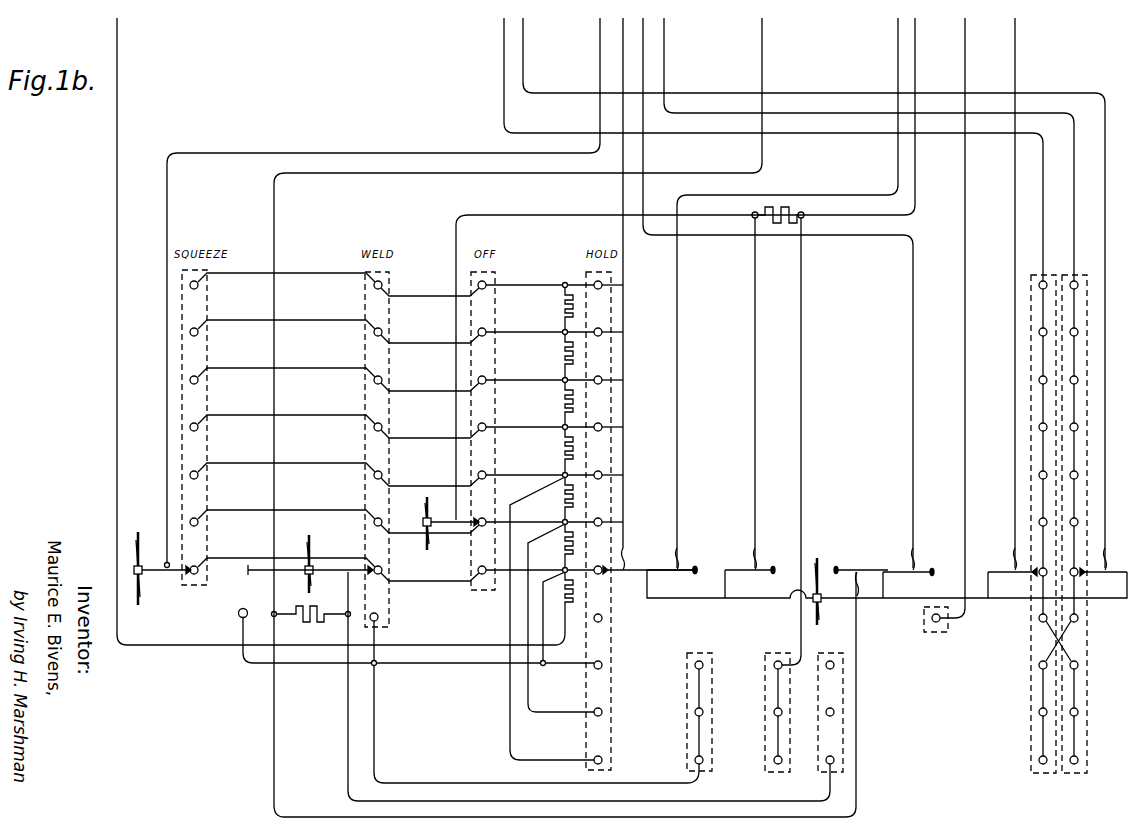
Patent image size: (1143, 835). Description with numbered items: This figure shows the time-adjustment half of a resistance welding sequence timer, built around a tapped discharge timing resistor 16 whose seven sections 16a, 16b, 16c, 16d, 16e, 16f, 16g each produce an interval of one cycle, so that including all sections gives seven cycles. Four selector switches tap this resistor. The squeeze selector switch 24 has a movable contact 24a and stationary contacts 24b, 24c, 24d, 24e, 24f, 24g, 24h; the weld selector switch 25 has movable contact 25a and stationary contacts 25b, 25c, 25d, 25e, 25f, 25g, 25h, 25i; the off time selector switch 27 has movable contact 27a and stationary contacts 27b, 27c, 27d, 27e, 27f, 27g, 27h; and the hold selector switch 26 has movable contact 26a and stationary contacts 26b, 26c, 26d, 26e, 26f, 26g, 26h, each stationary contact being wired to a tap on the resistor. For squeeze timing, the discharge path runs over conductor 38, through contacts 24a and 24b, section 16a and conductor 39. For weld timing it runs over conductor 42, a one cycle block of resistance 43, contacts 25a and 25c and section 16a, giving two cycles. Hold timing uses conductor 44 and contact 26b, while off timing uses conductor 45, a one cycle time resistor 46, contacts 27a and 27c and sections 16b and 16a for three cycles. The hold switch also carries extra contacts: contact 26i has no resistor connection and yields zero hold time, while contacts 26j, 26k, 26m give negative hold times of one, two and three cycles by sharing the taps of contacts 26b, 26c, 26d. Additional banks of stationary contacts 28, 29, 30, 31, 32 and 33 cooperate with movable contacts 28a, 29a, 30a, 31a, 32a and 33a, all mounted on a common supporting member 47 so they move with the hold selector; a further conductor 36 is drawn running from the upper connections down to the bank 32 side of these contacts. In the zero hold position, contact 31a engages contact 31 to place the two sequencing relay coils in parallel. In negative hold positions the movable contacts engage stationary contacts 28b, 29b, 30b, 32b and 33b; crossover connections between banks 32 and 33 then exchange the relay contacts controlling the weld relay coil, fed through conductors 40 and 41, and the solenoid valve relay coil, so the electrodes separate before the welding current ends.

The discharge timing resistor 16 is at (564, 437).
The section of the discharge timing resistor 16a is at (570, 592).
The section of the discharge timing resistor 16b is at (561, 541).
The section of the discharge timing resistor 16c is at (561, 493).
The section of the discharge timing resistor 16d is at (561, 446).
The section of the discharge timing resistor 16e is at (561, 398).
The section of the discharge timing resistor 16f is at (561, 351).
The section of the discharge timing resistor 16g is at (561, 303).
The squeeze selector switch 24 is at (182, 354).
The movable contact of the squeeze selector switch 24a is at (163, 578).
The stationary contact of the squeeze selector switch 24b is at (198, 573).
The stationary contact of the squeeze selector switch 24c is at (198, 525).
The stationary contact of the squeeze selector switch 24d is at (198, 478).
The stationary contact of the squeeze selector switch 24e is at (198, 430).
The stationary contact of the squeeze selector switch 24f is at (198, 383).
The stationary contact of the squeeze selector switch 24g is at (198, 335).
The stationary contact of the squeeze selector switch 24h is at (198, 288).
The weld selector switch 25 is at (365, 354).
The movable contact of the weld selector switch 25a is at (342, 574).
The stationary contact of the weld selector switch 25b is at (377, 614).
The stationary contact of the weld selector switch 25c is at (381, 567).
The stationary contact of the weld selector switch 25d is at (381, 519).
The stationary contact of the weld selector switch 25e is at (381, 472).
The stationary contact of the weld selector switch 25f is at (381, 424).
The stationary contact of the weld selector switch 25g is at (381, 377).
The stationary contact of the weld selector switch 25h is at (381, 329).
The stationary contact of the weld selector switch 25i is at (381, 282).
The hold selector switch 26 is at (611, 354).
The movable contact of the hold selector switch 26a is at (623, 572).
The stationary contact of the hold selector switch 26b is at (597, 566).
The stationary contact of the hold selector switch 26c is at (623, 522).
The stationary contact of the hold selector switch 26d is at (623, 475).
The stationary contact of the hold selector switch 26e is at (623, 427).
The stationary contact of the hold selector switch 26f is at (623, 380).
The stationary contact of the hold selector switch 26g is at (623, 332).
The stationary contact of the hold selector switch 26h is at (623, 285).
The zero hold time stationary contact 26i is at (602, 621).
The negative hold time stationary contact 26j is at (602, 668).
The negative hold time stationary contact 26k is at (602, 715).
The negative hold time stationary contact 26m is at (602, 763).
The off time selector switch 27 is at (471, 354).
The movable contact of the off time selector switch 27a is at (456, 528).
The stationary contact of the off time selector switch 27b is at (485, 573).
The stationary contact of the off time selector switch 27c is at (485, 525).
The stationary contact of the off time selector switch 27d is at (485, 478).
The stationary contact of the off time selector switch 27e is at (485, 430).
The stationary contact of the off time selector switch 27f is at (485, 383).
The stationary contact of the off time selector switch 27g is at (485, 335).
The stationary contact of the off time selector switch 27h is at (485, 288).
The bank of stationary contacts 28 is at (697, 650).
The movable contact 28a is at (692, 568).
The stationary contact 28b is at (695, 667).
The bank of stationary contacts 29 is at (775, 650).
The movable contact 29a is at (768, 568).
The stationary contact 29b is at (774, 667).
The bank of stationary contacts 30 is at (838, 650).
The movable contact 30a is at (850, 568).
The stationary contact 30b is at (834, 668).
The stationary contact 31 is at (940, 632).
The movable contact 31a is at (920, 570).
The bank of stationary contacts 32 is at (1031, 357).
The movable contact 32a is at (1000, 570).
The stationary contact 32b is at (1039, 668).
The bank of stationary contacts 33 is at (1087, 357).
The movable contact 33a is at (1110, 570).
The stationary contact 33b is at (1078, 668).
The conductor 36 is at (504, 40).
The conductor 38 is at (600, 40).
The conductor 39 is at (117, 40).
The conductor 40 is at (523, 40).
The conductor 41 is at (664, 40).
The conductor 42 is at (762, 40).
The one cycle block of resistance 43 is at (305, 620).
The conductor 44 is at (623, 66).
The conductor 45 is at (915, 40).
The one cycle time resistor 46 is at (780, 222).
The common supporting member 47 is at (745, 600).